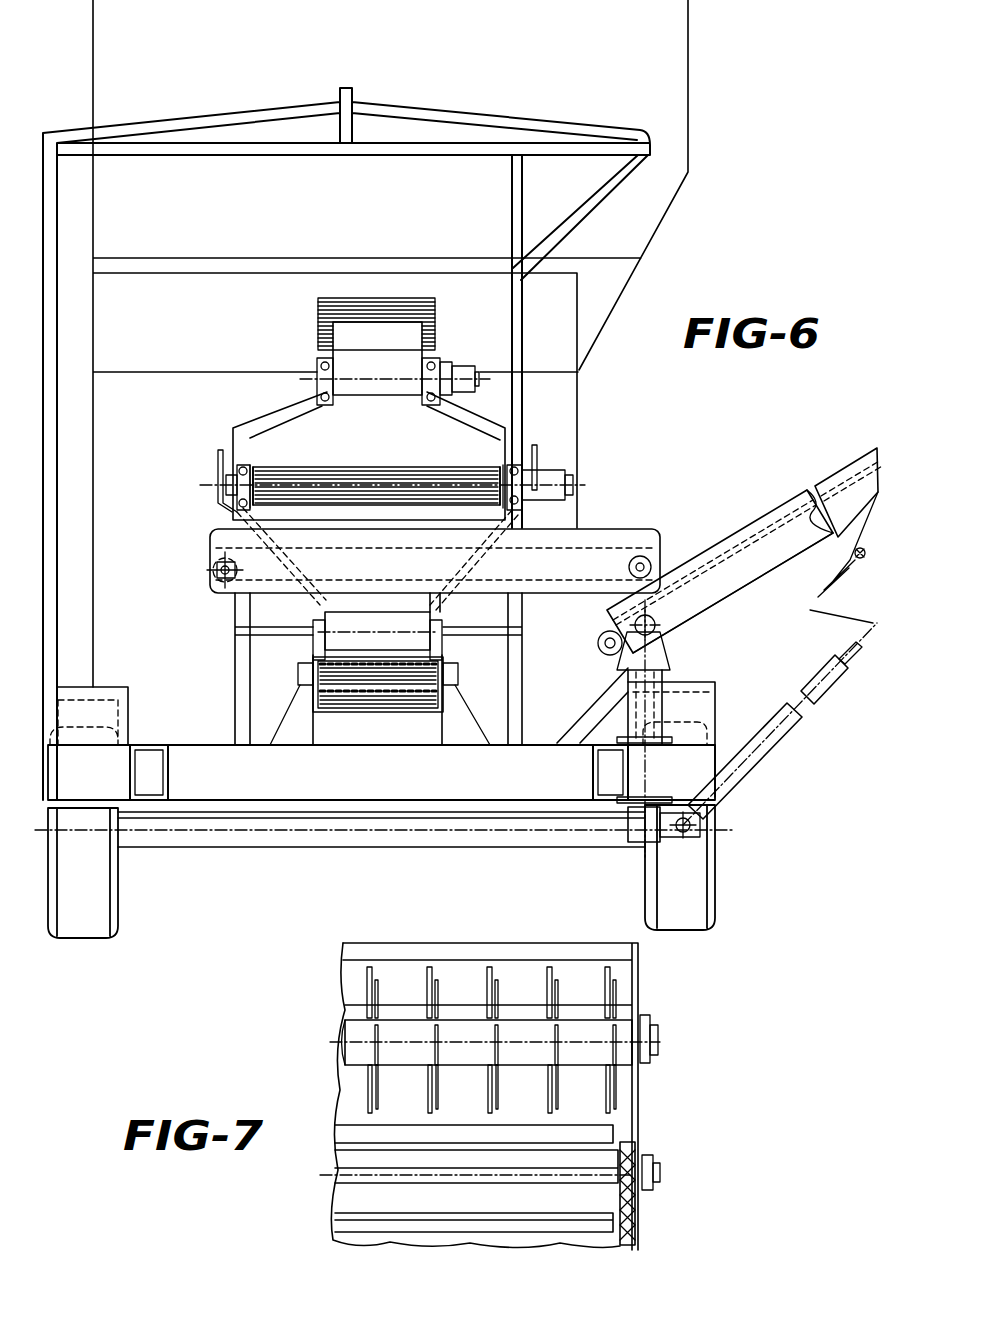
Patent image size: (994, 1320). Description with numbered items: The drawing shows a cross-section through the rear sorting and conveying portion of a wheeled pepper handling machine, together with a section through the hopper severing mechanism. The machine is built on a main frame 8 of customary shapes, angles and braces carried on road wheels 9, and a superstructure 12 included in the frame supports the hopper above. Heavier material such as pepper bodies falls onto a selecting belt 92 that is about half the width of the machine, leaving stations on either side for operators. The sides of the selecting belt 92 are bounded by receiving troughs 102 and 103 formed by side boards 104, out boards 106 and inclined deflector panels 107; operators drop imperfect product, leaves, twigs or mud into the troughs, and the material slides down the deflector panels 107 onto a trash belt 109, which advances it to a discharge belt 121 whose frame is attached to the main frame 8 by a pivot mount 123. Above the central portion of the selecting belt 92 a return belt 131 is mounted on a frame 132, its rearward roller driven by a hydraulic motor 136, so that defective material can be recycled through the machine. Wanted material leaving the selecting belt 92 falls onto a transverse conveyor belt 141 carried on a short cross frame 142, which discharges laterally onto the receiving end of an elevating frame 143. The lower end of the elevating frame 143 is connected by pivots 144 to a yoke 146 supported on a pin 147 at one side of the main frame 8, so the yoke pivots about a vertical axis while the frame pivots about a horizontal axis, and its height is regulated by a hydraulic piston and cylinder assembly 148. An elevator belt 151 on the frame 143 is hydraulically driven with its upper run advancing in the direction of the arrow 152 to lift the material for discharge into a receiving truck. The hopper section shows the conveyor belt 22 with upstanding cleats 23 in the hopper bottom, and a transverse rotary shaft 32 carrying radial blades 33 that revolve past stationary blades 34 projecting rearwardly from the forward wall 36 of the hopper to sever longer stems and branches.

In FIG. 6, the superstructure 12 is at (413, 82).
In FIG. 6, the return belt 131 is at (367, 335).
In FIG. 6, the frame 132 is at (322, 332).
In FIG. 6, the hydraulic motor 136 is at (456, 373).
In FIG. 6, the selecting belt 92 is at (386, 447).
In FIG. 6, the side boards 104 is at (250, 466).
In FIG. 6, the receiving trough 102 is at (228, 455).
In FIG. 6, the receiving trough 103 is at (528, 447).
In FIG. 6, the out boards 106 is at (222, 471).
In FIG. 6, the inclined deflector panels 107 is at (287, 560).
In FIG. 6, the transverse conveyor belt 141 is at (596, 541).
In FIG. 6, the cross frame 142 is at (655, 535).
In FIG. 6, the trash belt 109 is at (393, 577).
In FIG. 6, the discharge belt 121 is at (458, 673).
In FIG. 6, the pivot mount 123 is at (298, 677).
In FIG. 6, the main frame 8 is at (282, 806).
In FIG. 6, the road wheels 9 is at (108, 911).
In FIG. 6, the elevator belt 151 is at (738, 547).
In FIG. 6, the arrow 152 is at (828, 452).
In FIG. 6, the elevating frame 143 is at (725, 600).
In FIG. 6, the pivots 144 is at (628, 625).
In FIG. 6, the yoke 146 is at (668, 661).
In FIG. 6, the hydraulic piston and cylinder assembly 148 is at (757, 755).
In FIG. 6, the pin 147 is at (641, 847).
In FIG. 7, the forward wall 36 is at (506, 927).
In FIG. 7, the stationary blades 34 is at (432, 973).
In FIG. 7, the radial blades 33 is at (497, 993).
In FIG. 7, the rotary shaft 32 is at (660, 1040).
In FIG. 7, the belt 22 is at (620, 1200).
In FIG. 7, the cleats 23 is at (332, 1222).